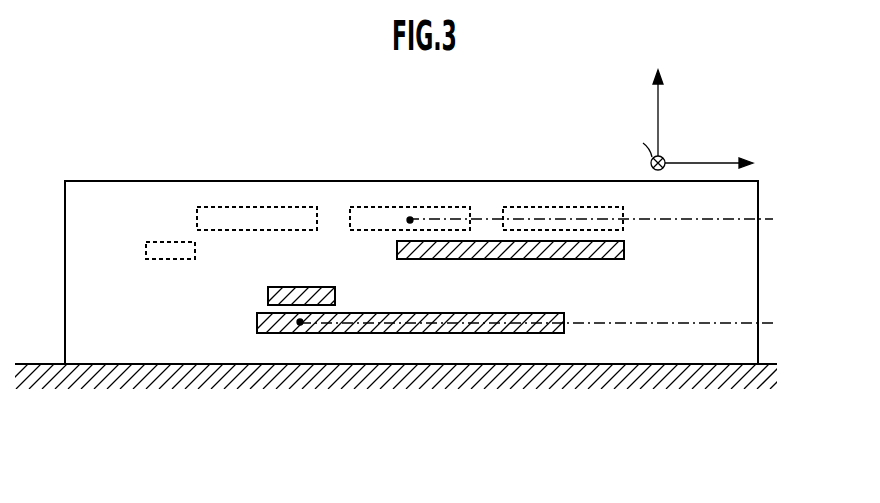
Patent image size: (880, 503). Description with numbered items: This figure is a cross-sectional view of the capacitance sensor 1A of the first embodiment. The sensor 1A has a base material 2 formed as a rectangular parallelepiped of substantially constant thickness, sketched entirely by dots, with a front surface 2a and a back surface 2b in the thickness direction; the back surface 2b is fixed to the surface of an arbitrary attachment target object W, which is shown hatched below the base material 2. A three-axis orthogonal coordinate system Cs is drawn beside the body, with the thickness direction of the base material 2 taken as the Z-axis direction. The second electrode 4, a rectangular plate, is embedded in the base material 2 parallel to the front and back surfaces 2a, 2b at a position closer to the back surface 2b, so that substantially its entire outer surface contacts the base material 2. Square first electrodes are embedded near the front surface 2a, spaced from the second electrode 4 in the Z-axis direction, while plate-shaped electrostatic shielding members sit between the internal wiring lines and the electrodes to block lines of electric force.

The capacitance sensor 1A is at (214, 128).
The base material 2 is at (102, 204).
The front surface of the base material 2a is at (307, 181).
The back surface of the base material 2b is at (390, 369).
The second electrode 4 is at (480, 333).
The attachment target object W is at (43, 364).
The three-axis orthogonal coordinate system Cs is at (683, 118).